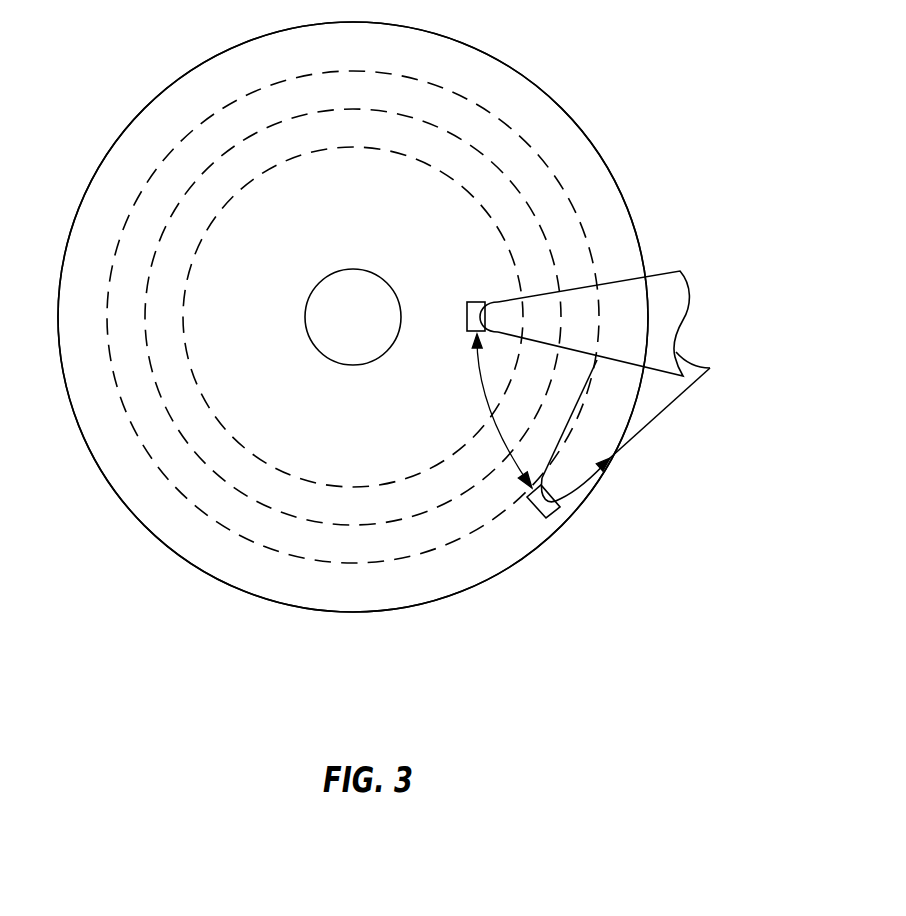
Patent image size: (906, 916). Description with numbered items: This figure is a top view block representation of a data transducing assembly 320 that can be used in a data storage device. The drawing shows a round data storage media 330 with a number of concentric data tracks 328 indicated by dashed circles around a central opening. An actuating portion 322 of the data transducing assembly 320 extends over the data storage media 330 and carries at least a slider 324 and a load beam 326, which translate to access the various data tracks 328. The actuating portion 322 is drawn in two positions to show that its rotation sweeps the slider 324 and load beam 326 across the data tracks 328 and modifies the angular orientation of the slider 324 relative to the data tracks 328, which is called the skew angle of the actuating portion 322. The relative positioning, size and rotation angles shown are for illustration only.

The data transducing assembly 320 is at (600, 65).
The actuating portion 322 is at (670, 413).
The slider 324 is at (553, 513).
The load beam 326 is at (545, 402).
The data tracks 328 is at (196, 182).
The data storage media 330 is at (120, 498).